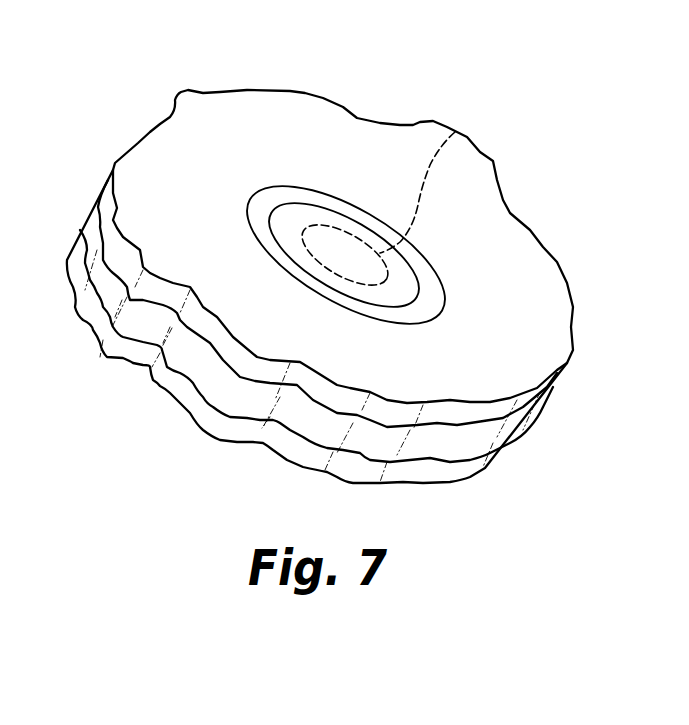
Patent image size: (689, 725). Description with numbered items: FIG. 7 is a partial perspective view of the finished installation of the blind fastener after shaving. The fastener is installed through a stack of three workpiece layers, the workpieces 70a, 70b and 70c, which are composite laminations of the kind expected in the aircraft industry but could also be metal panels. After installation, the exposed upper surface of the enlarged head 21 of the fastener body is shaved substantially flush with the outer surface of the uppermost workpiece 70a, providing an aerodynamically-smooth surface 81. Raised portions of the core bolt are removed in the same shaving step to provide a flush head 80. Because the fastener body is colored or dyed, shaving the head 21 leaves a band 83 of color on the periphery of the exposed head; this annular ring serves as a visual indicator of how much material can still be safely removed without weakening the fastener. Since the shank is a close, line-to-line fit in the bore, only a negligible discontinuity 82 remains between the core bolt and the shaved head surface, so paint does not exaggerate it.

The workpiece 70a is at (148, 174).
The workpiece 70b is at (150, 320).
The workpiece 70c is at (197, 405).
The head 21 is at (305, 186).
The flush head 80 is at (350, 237).
The aerodynamically-smooth surface 81 is at (283, 226).
The discontinuity 82 is at (458, 131).
The band of color 83 is at (430, 287).